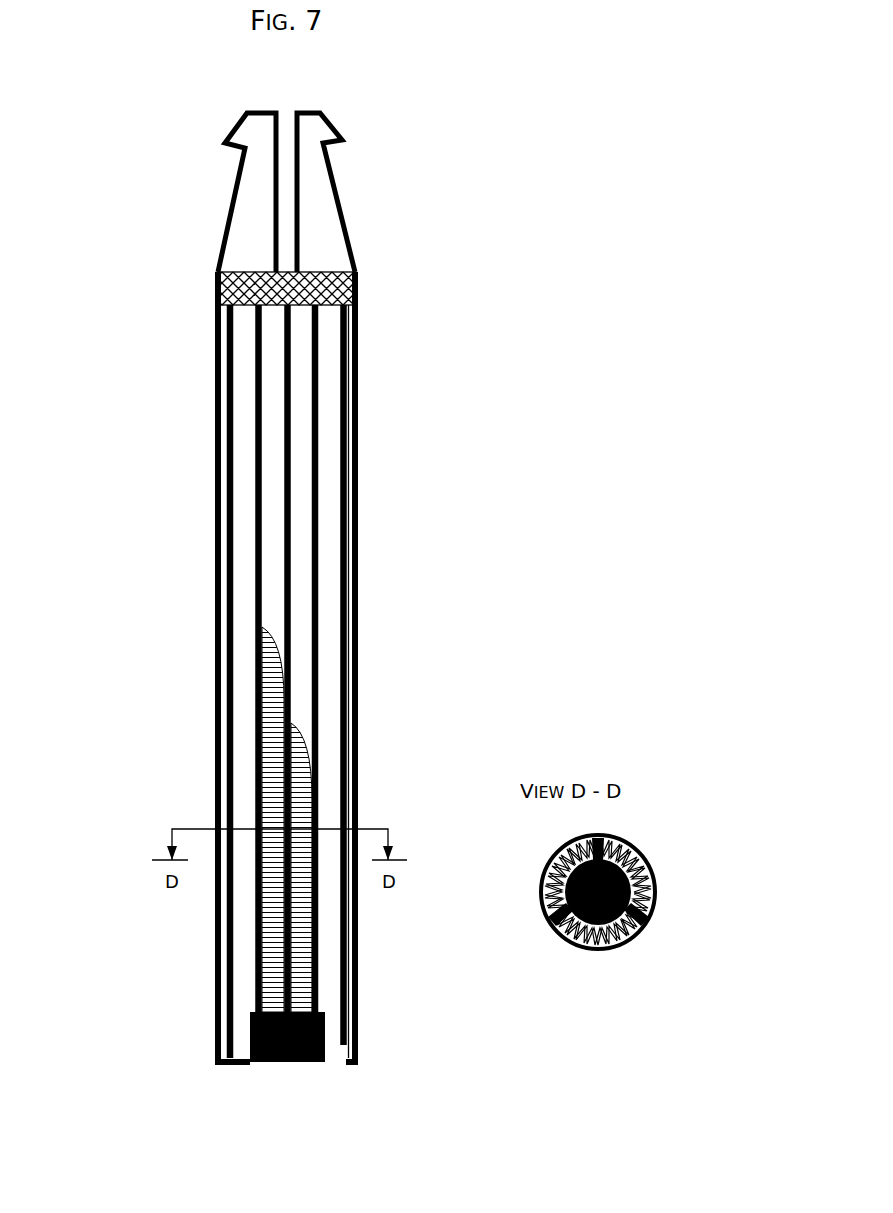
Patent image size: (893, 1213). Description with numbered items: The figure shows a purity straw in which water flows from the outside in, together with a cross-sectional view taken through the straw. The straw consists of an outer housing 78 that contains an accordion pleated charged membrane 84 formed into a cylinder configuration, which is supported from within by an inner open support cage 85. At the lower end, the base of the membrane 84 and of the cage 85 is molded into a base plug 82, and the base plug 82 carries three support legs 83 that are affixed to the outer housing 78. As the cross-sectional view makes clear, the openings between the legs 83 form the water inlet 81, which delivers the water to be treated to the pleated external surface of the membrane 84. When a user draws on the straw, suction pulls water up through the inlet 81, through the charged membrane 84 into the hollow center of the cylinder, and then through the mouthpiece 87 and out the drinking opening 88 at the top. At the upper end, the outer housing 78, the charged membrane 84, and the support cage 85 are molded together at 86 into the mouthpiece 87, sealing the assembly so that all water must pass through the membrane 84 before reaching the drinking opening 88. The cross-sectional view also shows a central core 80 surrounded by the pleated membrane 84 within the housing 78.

The outer housing 78 is at (215, 740).
The central core 80 is at (647, 858).
The water inlet 81 is at (333, 1038).
The base plug 82 is at (330, 1112).
The support legs 83 is at (223, 1064).
The accordion pleated charged membrane 84 is at (247, 493).
The inner open support cage 85 is at (253, 665).
The molded junction 86 is at (355, 277).
The mouthpiece 87 is at (338, 207).
The drinking opening 88 is at (295, 172).